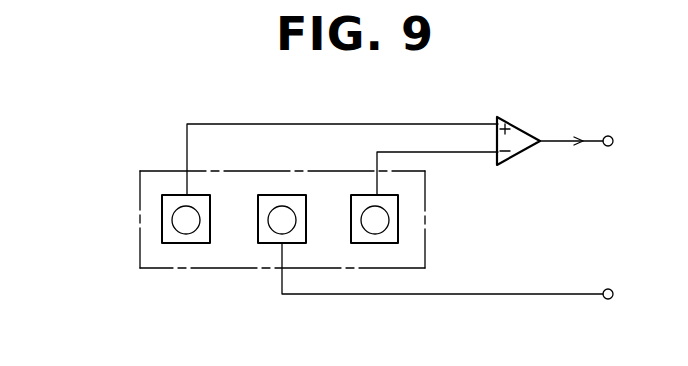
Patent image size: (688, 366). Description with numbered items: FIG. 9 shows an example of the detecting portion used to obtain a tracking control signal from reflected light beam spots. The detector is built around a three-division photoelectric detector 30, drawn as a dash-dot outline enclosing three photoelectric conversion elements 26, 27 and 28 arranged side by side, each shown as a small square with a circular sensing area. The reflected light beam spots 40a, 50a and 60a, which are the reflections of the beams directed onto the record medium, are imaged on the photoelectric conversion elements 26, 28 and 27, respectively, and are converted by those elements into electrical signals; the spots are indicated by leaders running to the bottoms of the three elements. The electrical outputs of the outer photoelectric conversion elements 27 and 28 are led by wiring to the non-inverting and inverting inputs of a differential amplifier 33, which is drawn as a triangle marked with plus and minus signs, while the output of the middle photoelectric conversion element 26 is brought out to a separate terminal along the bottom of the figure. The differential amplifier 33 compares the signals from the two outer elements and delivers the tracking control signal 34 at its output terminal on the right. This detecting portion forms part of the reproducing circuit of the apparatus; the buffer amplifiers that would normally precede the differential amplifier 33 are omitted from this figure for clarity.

The three-division photoelectric detector 30 is at (158, 166).
The photoelectric conversion element 26 is at (283, 195).
The photoelectric conversion element 27 is at (162, 220).
The photoelectric conversion element 28 is at (399, 222).
The differential amplifier 33 is at (513, 120).
The tracking control signal 34 is at (559, 145).
The reflected light beam spot 50a is at (186, 243).
The reflected light beam spot 40a is at (275, 243).
The reflected light beam spot 60a is at (373, 243).